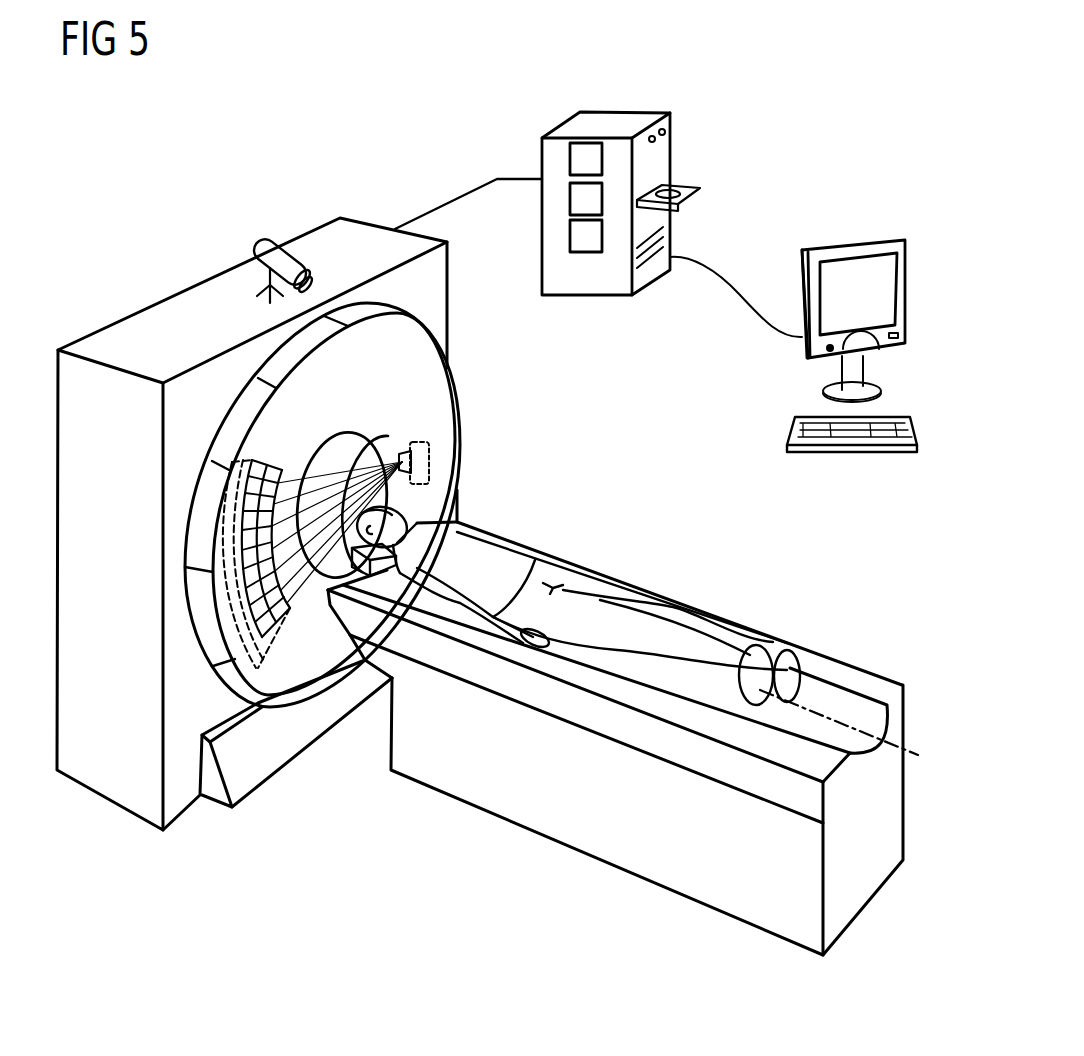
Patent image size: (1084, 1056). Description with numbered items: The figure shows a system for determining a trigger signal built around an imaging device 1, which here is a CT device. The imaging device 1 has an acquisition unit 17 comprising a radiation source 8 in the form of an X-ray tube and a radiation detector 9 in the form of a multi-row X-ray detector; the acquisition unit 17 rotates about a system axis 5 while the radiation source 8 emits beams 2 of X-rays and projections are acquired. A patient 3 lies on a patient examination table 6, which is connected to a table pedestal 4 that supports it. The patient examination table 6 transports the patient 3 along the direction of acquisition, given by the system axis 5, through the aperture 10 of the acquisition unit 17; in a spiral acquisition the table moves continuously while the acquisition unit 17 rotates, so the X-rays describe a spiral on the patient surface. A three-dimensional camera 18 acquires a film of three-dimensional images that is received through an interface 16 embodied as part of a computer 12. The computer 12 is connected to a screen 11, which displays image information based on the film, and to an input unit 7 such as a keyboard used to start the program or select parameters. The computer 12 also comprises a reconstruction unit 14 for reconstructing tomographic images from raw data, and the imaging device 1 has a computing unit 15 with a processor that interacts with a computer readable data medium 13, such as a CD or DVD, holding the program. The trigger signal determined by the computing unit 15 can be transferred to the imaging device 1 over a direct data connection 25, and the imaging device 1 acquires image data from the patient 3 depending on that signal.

The imaging device 1 is at (153, 283).
The beams 2 is at (360, 457).
The patient 3 is at (509, 563).
The table pedestal 4 is at (575, 817).
The system axis 5 is at (932, 752).
The patient examination table 6 is at (848, 672).
The input unit 7 is at (782, 445).
The radiation source 8 is at (432, 455).
The radiation detector 9 is at (263, 640).
The aperture 10 is at (330, 462).
The screen 11 is at (850, 243).
The computer 12 is at (605, 122).
The computer readable data medium 13 is at (675, 188).
The reconstruction unit 14 is at (570, 160).
The computing unit 15 is at (570, 195).
The interface 16 is at (570, 236).
The acquisition unit 17 is at (461, 393).
The 3D camera 18 is at (268, 247).
The direct data connection 25 is at (433, 208).